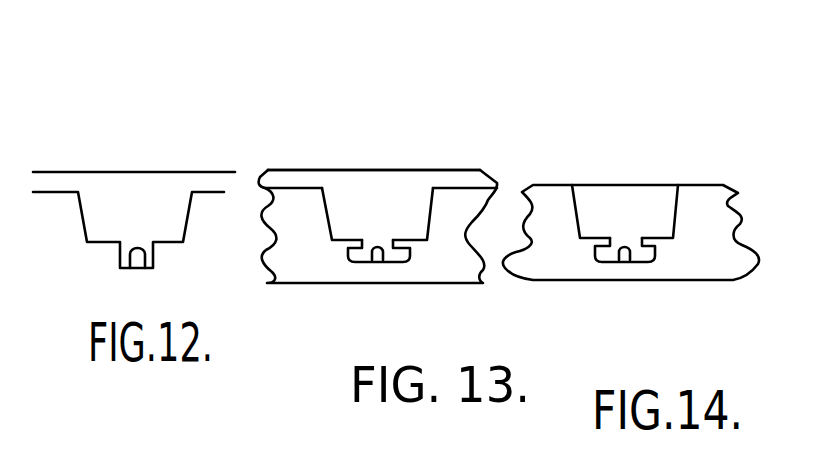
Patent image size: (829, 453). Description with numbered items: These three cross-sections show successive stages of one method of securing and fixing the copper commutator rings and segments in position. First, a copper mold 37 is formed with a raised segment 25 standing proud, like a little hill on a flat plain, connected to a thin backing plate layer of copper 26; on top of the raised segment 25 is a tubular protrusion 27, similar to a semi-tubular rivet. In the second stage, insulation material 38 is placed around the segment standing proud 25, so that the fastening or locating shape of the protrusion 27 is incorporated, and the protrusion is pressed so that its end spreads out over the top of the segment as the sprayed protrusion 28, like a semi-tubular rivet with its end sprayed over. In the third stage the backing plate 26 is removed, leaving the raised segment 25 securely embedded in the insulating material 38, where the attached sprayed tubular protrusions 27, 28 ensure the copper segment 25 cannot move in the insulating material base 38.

In FIG. 12, the raised segment 25 is at (137, 207).
In FIG. 13, the raised segment 25 is at (370, 180).
In FIG. 14, the raised segment 25 is at (635, 200).
In FIG. 12, the backing plate layer of copper 26 is at (60, 178).
In FIG. 13, the backing plate layer of copper 26 is at (467, 178).
In FIG. 12, the tubular protrusion 27 is at (120, 252).
In FIG. 13, the spread tubular protrusion 28 is at (358, 252).
In FIG. 14, the spread tubular protrusion 28 is at (600, 253).
In FIG. 13, the copper mold 37 is at (410, 170).
In FIG. 13, the insulation material 38 is at (462, 242).
In FIG. 14, the insulation material 38 is at (697, 258).